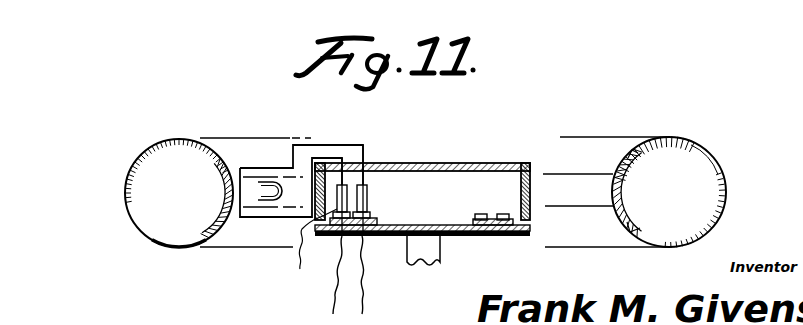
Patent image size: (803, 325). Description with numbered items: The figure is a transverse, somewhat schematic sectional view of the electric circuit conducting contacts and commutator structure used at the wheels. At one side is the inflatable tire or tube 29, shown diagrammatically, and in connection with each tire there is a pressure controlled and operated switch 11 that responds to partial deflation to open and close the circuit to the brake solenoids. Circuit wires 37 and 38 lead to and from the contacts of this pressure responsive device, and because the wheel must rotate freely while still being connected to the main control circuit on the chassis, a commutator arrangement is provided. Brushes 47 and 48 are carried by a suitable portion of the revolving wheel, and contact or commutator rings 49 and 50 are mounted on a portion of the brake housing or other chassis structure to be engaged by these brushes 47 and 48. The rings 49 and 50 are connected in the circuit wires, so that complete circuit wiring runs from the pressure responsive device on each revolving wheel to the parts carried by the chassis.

The pressure controlled and operated switch 11 is at (243, 193).
The inflatable tire or tube 29 is at (707, 175).
The circuit wire 37 is at (331, 300).
The circuit wire 38 is at (362, 296).
The brush 47 is at (291, 251).
The brush 48 is at (368, 198).
The contact or commutator ring 49 is at (508, 213).
The contact or commutator ring 50 is at (475, 216).